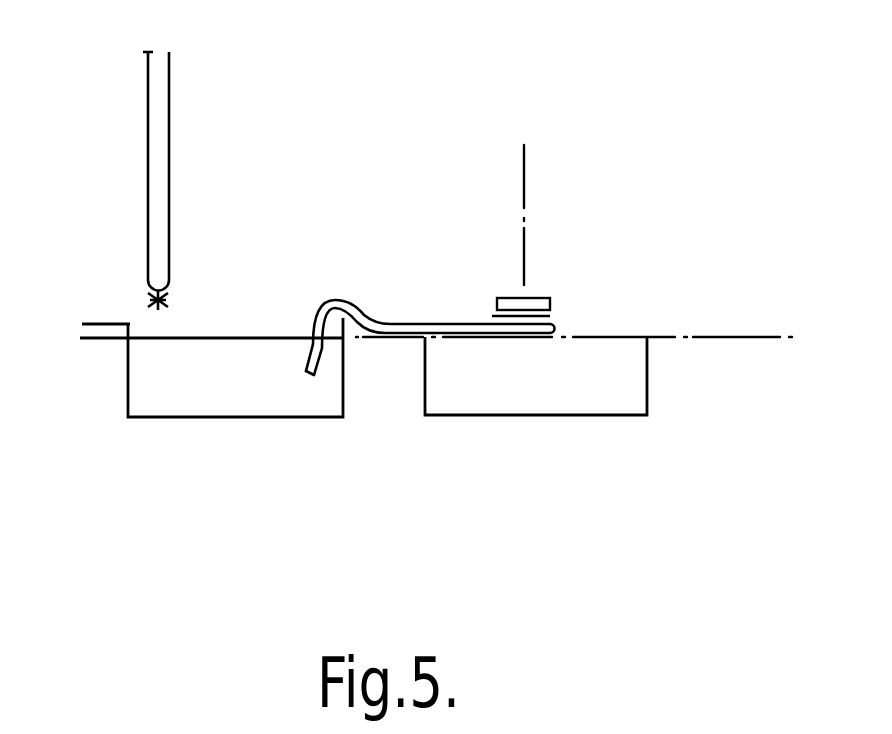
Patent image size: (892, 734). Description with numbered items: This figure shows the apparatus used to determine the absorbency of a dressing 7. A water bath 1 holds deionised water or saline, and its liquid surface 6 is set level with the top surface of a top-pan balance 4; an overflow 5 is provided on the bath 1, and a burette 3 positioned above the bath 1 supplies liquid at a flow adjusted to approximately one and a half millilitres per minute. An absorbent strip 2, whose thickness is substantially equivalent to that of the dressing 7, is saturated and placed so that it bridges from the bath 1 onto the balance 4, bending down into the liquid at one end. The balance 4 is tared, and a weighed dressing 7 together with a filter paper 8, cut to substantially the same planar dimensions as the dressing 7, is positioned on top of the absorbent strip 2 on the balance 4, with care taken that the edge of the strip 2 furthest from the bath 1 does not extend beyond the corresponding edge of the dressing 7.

The water bath 1 is at (240, 417).
The absorbent strip 2 is at (334, 298).
The burette 3 is at (160, 129).
The top-pan balance 4 is at (550, 415).
The overflow 5 is at (82, 324).
The surface 6 is at (209, 332).
The dressing 7 is at (552, 302).
The filter paper 8 is at (552, 318).